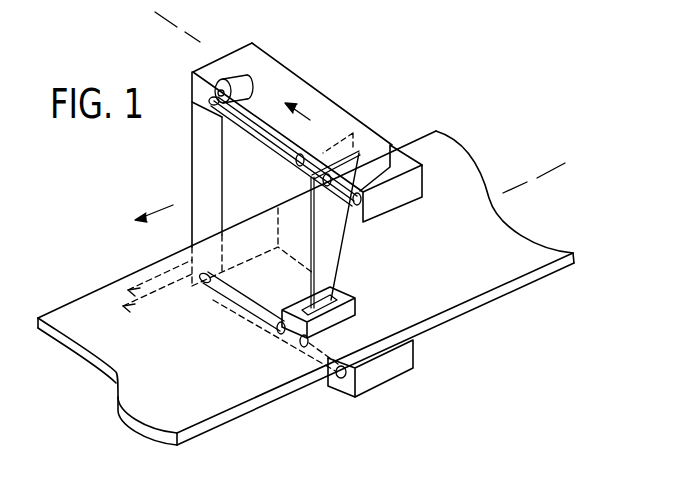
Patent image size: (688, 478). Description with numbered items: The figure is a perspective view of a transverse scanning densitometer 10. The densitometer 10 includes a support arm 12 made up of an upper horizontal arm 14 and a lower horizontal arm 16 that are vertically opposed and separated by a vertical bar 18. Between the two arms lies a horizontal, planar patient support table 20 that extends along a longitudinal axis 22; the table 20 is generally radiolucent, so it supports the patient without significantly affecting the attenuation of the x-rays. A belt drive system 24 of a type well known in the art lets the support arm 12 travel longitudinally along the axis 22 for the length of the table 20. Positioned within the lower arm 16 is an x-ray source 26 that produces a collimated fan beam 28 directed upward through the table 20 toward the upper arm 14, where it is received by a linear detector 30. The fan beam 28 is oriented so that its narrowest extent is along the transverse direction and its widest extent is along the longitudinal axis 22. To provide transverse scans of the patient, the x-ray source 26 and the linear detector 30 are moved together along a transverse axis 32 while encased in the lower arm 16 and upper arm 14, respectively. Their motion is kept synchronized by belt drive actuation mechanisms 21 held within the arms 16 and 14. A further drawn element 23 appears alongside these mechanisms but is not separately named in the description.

The assembly 10 is at (426, 68).
The frame 12 is at (215, 66).
The upper arm 14 is at (312, 97).
The lower mounting block 16 is at (370, 380).
The vertical support wall 18 is at (192, 158).
The base plate 20 is at (518, 265).
The upper rod 21 is at (228, 122).
The direction indicator 22 is at (535, 179).
The lower rod 23 is at (229, 316).
The slot 24 is at (160, 278).
The small block 26 is at (350, 318).
The wire 28 is at (336, 238).
The end block 30 is at (368, 137).
The direction indicator 32 is at (177, 28).